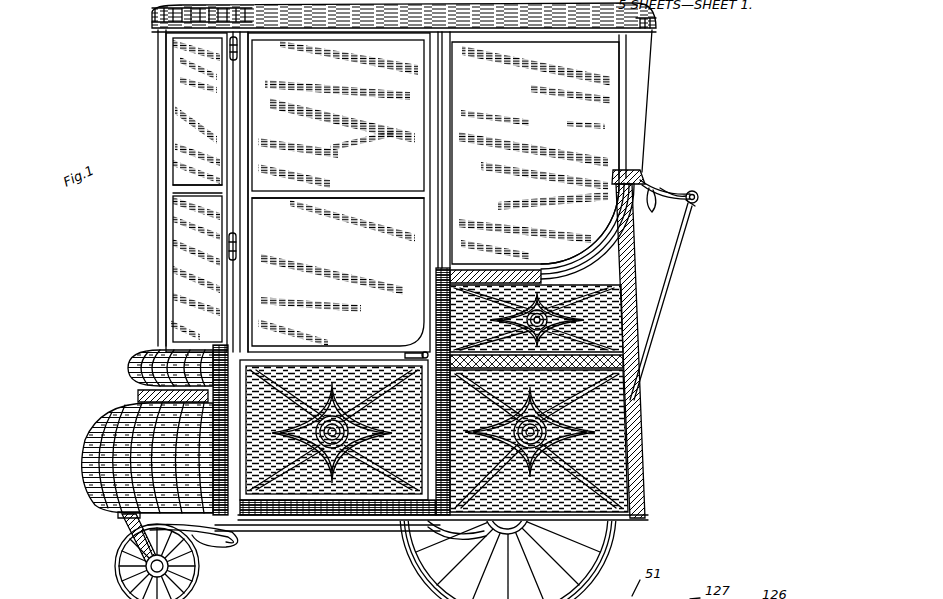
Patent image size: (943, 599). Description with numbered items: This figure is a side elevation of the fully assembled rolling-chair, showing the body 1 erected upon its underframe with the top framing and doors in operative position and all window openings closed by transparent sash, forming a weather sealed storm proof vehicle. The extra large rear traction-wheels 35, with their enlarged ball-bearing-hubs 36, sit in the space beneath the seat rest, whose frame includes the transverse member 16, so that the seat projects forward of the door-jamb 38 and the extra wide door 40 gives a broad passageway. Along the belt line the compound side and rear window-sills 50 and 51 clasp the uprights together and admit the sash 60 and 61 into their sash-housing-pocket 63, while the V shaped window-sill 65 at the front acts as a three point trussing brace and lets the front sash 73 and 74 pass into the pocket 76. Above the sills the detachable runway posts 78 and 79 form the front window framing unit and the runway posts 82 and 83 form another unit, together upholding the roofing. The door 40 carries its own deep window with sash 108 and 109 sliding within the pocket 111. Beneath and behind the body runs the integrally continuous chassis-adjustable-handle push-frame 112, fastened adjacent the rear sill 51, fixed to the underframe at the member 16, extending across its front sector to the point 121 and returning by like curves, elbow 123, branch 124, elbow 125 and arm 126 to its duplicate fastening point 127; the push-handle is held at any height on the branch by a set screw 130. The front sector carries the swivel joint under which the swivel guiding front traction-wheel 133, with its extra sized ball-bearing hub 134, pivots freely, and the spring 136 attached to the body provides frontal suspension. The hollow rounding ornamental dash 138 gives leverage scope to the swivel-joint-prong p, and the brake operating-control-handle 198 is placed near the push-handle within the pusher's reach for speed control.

The body 1 is at (655, 440).
The transverse member 16 is at (630, 394).
The traction-wheels 35 is at (590, 562).
The ball-bearing-hubs 36 is at (507, 536).
The door-jamb 38 is at (503, 502).
The door 40 is at (233, 144).
The side window-sill 50 is at (535, 270).
The rear window-sill 51 is at (640, 176).
The sash 60 is at (540, 100).
The sash 61 is at (622, 597).
The sash-housing-pocket 63 is at (605, 315).
The V shaped window-sill 65 is at (155, 348).
The sash 73 is at (200, 98).
The sash 74 is at (196, 275).
The sash-housing-pocket 76 is at (148, 378).
The front window-and-sash-runway post 78 is at (160, 185).
The front window-and-sash-runway post 79 is at (233, 217).
The runway post structure 82 is at (440, 197).
The runway post structure 83 is at (633, 115).
The sash 108 is at (335, 192).
The sash 109 is at (338, 272).
The pocket 111 is at (352, 463).
The chassis-adjustable-handle push-frame 112 is at (300, 530).
The point 121 is at (138, 537).
The elbow 123 is at (449, 534).
The branch 124 is at (666, 262).
The elbow 125 is at (698, 197).
The arm 126 is at (665, 191).
The fastening point 127 is at (648, 183).
The set screw 130 is at (690, 205).
The swivel guiding front traction-wheel 133 is at (156, 561).
The ball-bearing hub 134 is at (145, 577).
The spring 136 is at (224, 536).
The ornamental dash 138 is at (88, 442).
The operating-control-handle 198 is at (651, 213).
The swivel-joint-prong p is at (128, 532).